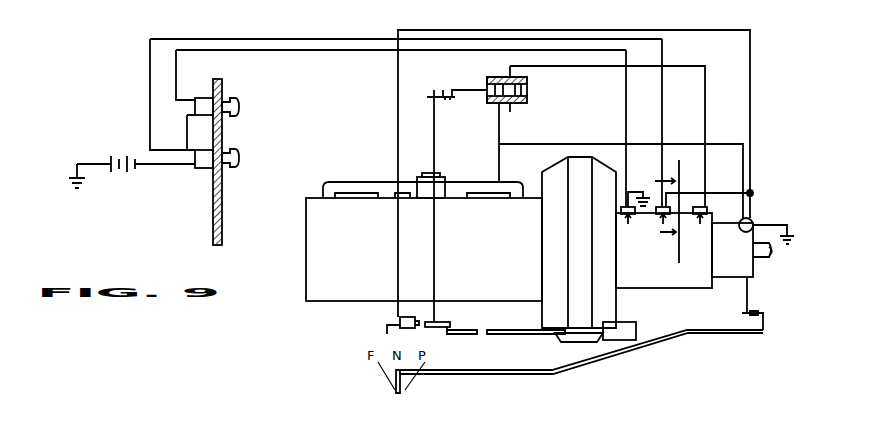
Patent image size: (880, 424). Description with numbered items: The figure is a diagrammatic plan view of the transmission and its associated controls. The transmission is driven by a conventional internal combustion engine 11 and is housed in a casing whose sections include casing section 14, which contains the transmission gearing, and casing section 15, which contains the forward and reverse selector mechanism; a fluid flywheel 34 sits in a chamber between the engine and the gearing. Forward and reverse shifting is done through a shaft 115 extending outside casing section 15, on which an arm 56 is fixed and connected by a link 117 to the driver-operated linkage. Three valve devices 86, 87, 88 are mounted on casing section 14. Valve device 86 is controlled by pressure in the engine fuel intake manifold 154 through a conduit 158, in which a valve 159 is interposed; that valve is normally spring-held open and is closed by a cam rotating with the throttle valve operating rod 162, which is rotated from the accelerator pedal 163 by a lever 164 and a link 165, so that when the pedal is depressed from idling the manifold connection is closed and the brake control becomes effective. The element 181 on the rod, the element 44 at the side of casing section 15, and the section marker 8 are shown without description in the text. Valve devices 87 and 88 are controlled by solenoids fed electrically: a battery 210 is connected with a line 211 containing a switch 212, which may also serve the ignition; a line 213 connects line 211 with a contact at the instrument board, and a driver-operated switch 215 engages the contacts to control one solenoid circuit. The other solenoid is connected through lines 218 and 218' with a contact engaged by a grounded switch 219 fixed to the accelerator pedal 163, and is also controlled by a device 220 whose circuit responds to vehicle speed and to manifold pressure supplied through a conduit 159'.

The section line 8- 8 is at (660, 211).
The internal combustion engine 11 is at (337, 301).
The casing section 14 is at (690, 287).
The casing section 15 is at (730, 272).
The fluid flywheel 34 is at (616, 297).
The connector 44 is at (770, 252).
The arm 56 is at (764, 312).
The valve device 86 is at (698, 226).
The valve device 87 is at (670, 221).
The valve device 88 is at (633, 218).
The shaft 115 is at (750, 290).
The link 117 is at (617, 365).
The engine fuel intake manifold 154 is at (385, 185).
The conduit 158 is at (706, 88).
The valve 159 is at (489, 86).
The conduit 159' is at (621, 160).
The throttle valve operating rod 162 is at (436, 145).
The accelerator pedal 163 is at (636, 328).
The lever 164 is at (438, 321).
The link 165 is at (512, 336).
The lever arm 181 is at (444, 88).
The battery 210 is at (121, 178).
The line 211 is at (663, 94).
The switch 212 is at (204, 168).
The line 213 is at (626, 103).
The switch 215 is at (212, 92).
The line 218 is at (709, 192).
The line 218' is at (450, 173).
The grounded switch 219 is at (398, 323).
The device 220 is at (752, 220).